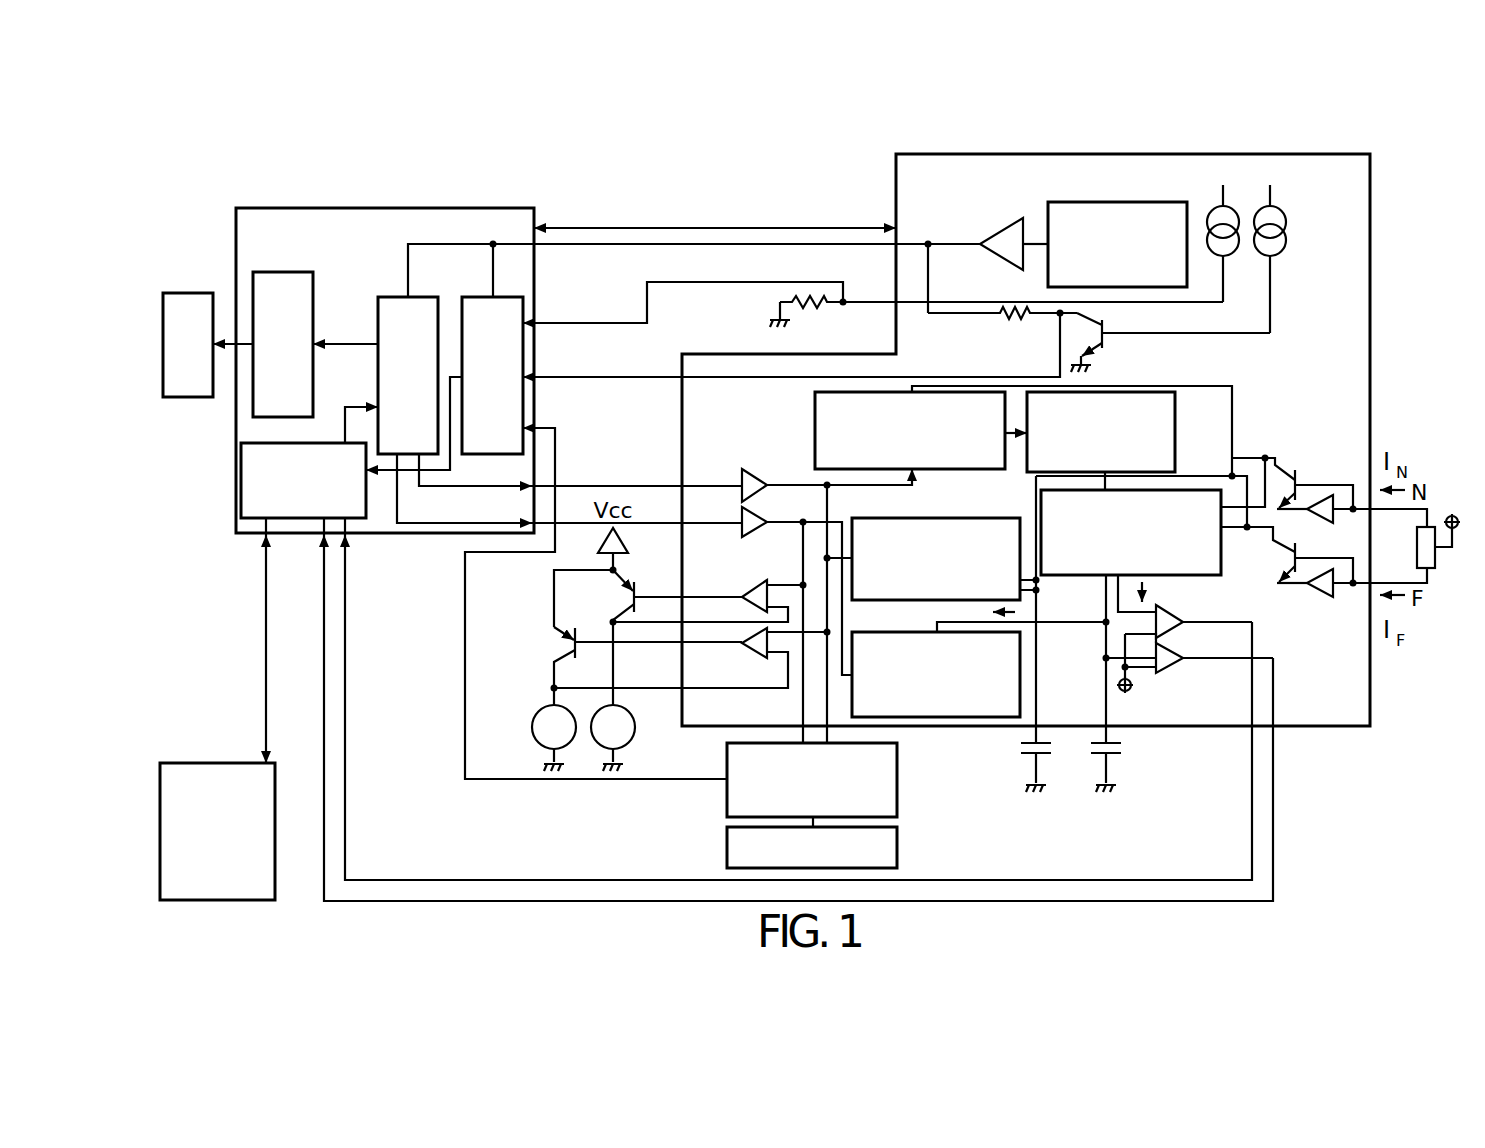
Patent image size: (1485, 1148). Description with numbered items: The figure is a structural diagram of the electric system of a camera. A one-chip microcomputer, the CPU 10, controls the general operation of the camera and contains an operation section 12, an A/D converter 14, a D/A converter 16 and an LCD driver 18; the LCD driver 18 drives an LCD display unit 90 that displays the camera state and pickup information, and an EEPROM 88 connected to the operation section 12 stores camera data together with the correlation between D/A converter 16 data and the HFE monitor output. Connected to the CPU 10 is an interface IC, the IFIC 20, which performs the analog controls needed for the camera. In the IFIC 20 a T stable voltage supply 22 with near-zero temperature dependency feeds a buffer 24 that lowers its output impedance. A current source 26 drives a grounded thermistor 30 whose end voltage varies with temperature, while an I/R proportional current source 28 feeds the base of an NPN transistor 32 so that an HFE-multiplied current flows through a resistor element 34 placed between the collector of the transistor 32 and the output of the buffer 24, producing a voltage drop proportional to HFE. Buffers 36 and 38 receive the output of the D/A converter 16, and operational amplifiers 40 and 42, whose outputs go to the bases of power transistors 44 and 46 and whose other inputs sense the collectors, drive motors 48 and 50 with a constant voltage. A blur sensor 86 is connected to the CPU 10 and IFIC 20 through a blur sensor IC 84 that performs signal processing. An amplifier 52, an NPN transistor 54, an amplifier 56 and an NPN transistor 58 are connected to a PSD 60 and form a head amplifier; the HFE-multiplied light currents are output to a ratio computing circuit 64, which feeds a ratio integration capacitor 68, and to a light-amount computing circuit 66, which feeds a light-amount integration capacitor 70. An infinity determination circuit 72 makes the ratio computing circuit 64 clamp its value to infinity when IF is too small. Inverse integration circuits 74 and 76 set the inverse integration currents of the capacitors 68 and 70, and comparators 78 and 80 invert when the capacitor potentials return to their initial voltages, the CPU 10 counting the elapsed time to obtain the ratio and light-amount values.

The one-chip microcomputer (CPU) 10 is at (482, 208).
The operation section 12 is at (334, 443).
The A/D converter 14 is at (483, 297).
The D/A converter 16 is at (395, 297).
The LCD driver 18 is at (283, 272).
The interface IC (IFIC) 20 is at (1370, 270).
The T stable voltage supply 22 is at (1125, 202).
The buffer 24 is at (1000, 235).
The current source 26 is at (1232, 208).
The I/R proportional current source 28 is at (1282, 208).
The thermistor 30 is at (815, 308).
The NPN transistor 32 is at (1112, 318).
The resistor element 34 is at (1002, 322).
The buffer 36 is at (760, 470).
The buffer 38 is at (763, 536).
The operational amplifier 40 is at (745, 655).
The operational amplifier 42 is at (748, 582).
The power transistor 44 is at (556, 632).
The power transistor 46 is at (638, 582).
The motor 48 is at (534, 715).
The motor 50 is at (635, 740).
The amplifier 52 is at (1333, 520).
The NPN transistor 54 is at (1300, 470).
The amplifier 56 is at (1333, 598).
The NPN transistor 58 is at (1290, 590).
The PSD 60 is at (1440, 568).
The ratio computing circuit 64 is at (1175, 428).
The light-amount computing circuit 66 is at (1221, 555).
The ratio integration capacitor 68 is at (1020, 750).
The light-amount integration capacitor 70 is at (1122, 750).
The infinity determination circuit 72 is at (953, 469).
The inverse integration circuit 74 is at (890, 518).
The inverse integration circuit 76 is at (922, 717).
The comparator 78 is at (1183, 608).
The comparator 80 is at (1175, 670).
The blur sensor IC 84 is at (727, 800).
The blur sensor 86 is at (897, 848).
The EEPROM 88 is at (217, 763).
The LCD display unit 90 is at (188, 397).